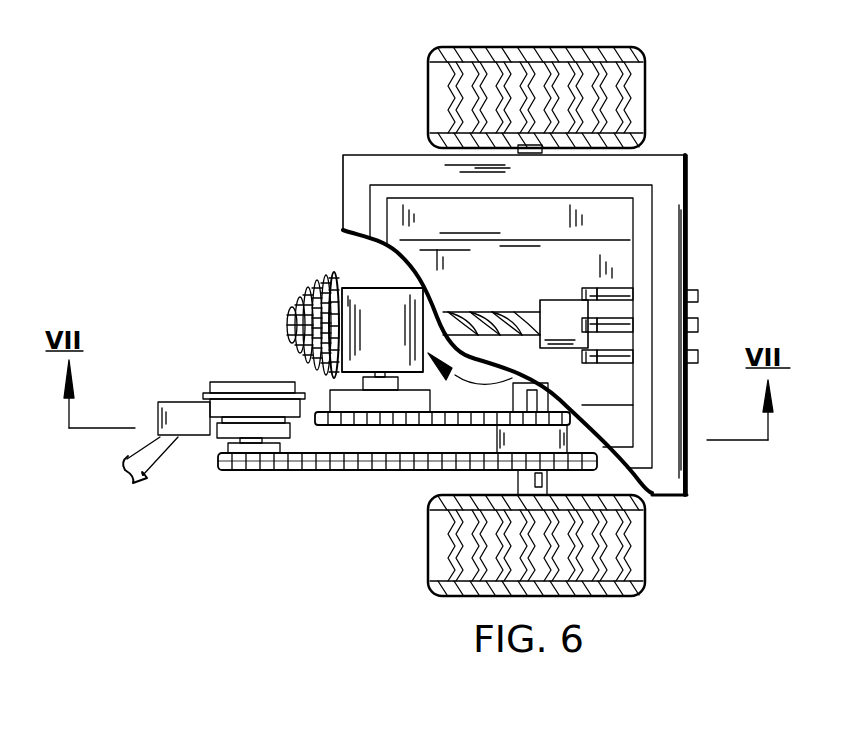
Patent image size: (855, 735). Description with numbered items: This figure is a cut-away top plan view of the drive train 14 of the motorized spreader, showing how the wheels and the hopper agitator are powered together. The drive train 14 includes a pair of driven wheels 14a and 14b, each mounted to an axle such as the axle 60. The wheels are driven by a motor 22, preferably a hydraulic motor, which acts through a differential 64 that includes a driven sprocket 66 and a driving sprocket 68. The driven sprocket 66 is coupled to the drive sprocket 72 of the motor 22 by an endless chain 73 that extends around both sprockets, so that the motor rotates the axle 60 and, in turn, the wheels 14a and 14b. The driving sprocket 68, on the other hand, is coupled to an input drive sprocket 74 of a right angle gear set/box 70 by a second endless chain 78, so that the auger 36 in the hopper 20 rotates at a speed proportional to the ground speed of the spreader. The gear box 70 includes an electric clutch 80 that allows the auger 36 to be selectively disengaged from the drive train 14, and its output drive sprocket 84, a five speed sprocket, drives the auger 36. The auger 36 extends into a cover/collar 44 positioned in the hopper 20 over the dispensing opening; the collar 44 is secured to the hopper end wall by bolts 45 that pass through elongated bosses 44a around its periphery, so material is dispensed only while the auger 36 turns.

The drive train 14 is at (360, 520).
The driven wheel 14a is at (618, 553).
The driven wheel 14b is at (632, 83).
The hopper 20 is at (382, 167).
The motor 22 is at (222, 372).
The auger 36 is at (482, 290).
The cover/collar 44 is at (590, 288).
The elongated bosses 44a is at (625, 323).
The bolts 45 is at (622, 292).
The axle 60 is at (610, 508).
The differential 64 is at (480, 445).
The driven sprocket 66 is at (592, 452).
The driving sprocket 68 is at (513, 380).
The gear set/box 70 is at (513, 412).
The drive sprocket 72 is at (220, 448).
The endless chain 73 is at (322, 470).
The input drive sprocket 74 is at (382, 427).
The endless chain 78 is at (467, 428).
The electric clutch 80 is at (328, 389).
The output drive sprocket 84 is at (296, 265).